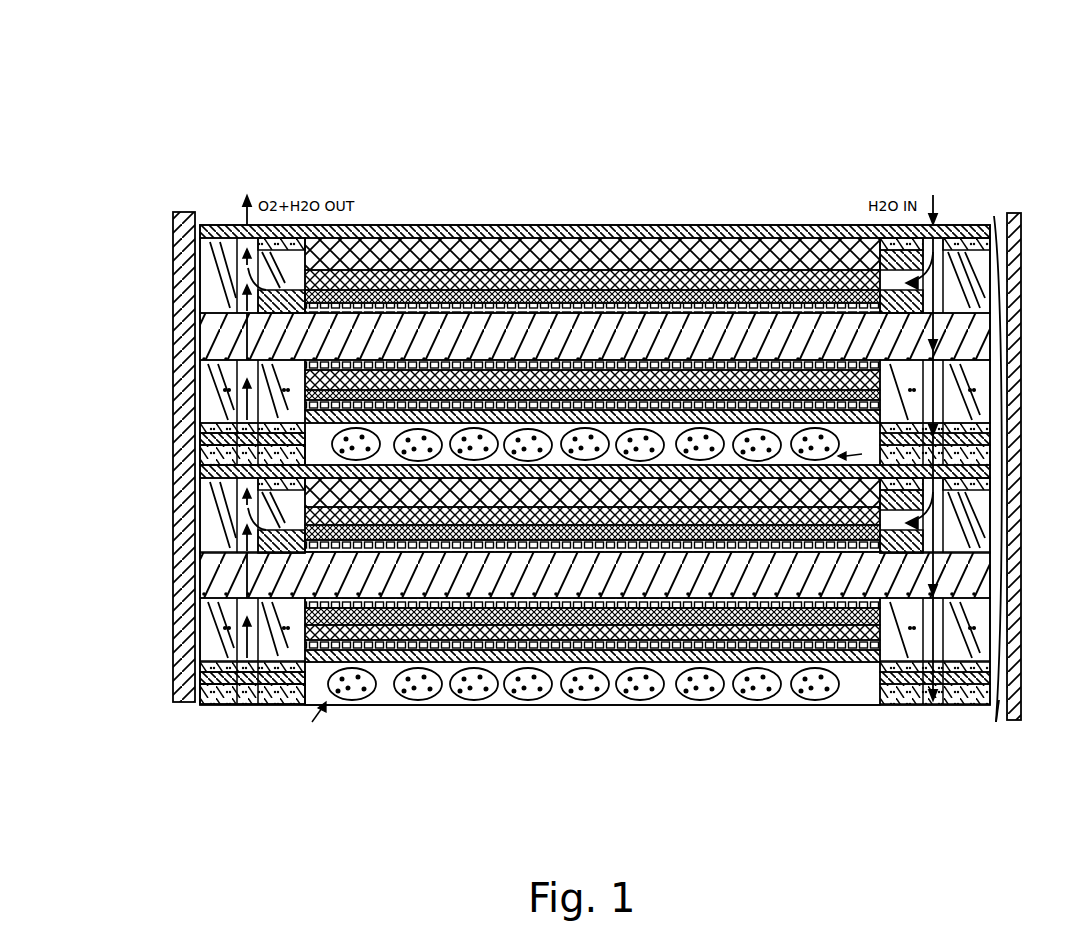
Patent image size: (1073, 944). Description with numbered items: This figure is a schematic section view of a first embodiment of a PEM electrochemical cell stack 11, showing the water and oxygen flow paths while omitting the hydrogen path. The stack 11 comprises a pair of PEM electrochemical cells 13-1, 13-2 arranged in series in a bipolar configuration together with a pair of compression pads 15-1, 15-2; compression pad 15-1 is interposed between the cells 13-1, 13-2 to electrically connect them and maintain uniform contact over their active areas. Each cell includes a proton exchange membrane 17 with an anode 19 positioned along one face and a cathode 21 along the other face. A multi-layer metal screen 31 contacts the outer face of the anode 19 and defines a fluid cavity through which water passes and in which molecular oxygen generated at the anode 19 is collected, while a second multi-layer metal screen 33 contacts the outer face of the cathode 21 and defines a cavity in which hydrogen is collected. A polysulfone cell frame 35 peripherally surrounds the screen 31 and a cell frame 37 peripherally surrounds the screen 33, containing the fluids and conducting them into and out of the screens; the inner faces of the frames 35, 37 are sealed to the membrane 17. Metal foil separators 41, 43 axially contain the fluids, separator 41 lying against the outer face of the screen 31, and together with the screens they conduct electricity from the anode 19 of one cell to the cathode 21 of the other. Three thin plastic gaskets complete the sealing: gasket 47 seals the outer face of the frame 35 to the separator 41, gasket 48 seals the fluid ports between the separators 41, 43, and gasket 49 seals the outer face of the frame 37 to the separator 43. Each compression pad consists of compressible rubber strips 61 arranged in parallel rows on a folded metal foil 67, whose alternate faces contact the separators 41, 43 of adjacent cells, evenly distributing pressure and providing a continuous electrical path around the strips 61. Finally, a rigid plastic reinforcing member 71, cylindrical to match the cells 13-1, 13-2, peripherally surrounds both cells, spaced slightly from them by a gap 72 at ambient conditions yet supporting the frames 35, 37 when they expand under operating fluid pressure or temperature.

The PEM electrochemical cell stack 11 is at (398, 112).
The PEM electrochemical cell 13-1 is at (994, 222).
The PEM electrochemical cell 13-2 is at (996, 722).
The compression pad 15-1 is at (863, 456).
The compression pad 15-2 is at (315, 720).
The proton exchange membrane 17 is at (210, 338).
The anode 19 is at (820, 240).
The cathode 21 is at (744, 392).
The multi-layer metal screen 31 is at (634, 252).
The multi-layer metal screen 33 is at (447, 378).
The cell frame 35 is at (210, 288).
The cell frame 37 is at (210, 378).
The separator 41 is at (552, 232).
The separator 43 is at (205, 432).
The gasket 47 is at (212, 232).
The gasket 48 is at (205, 448).
The gasket 49 is at (205, 428).
The compressible rubber strips 61 is at (510, 706).
The folded metal foil 67 is at (600, 706).
The reinforcing member 71 is at (1016, 388).
The gap 72 is at (192, 266).